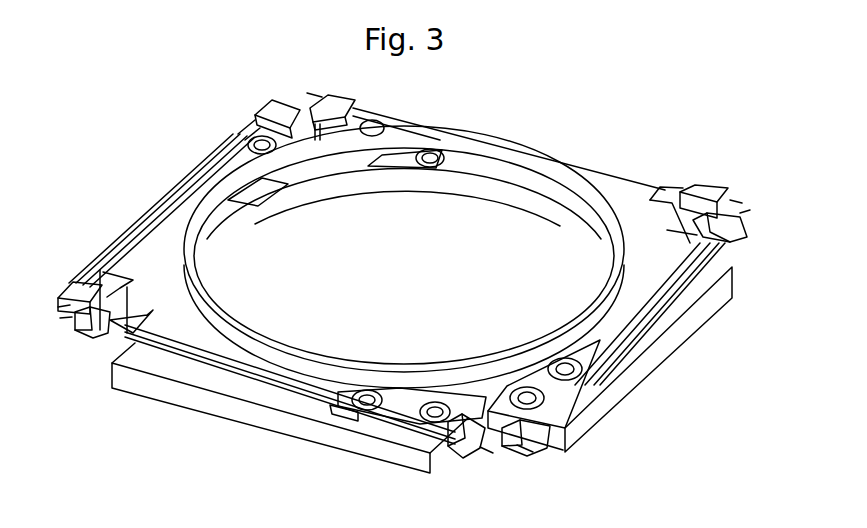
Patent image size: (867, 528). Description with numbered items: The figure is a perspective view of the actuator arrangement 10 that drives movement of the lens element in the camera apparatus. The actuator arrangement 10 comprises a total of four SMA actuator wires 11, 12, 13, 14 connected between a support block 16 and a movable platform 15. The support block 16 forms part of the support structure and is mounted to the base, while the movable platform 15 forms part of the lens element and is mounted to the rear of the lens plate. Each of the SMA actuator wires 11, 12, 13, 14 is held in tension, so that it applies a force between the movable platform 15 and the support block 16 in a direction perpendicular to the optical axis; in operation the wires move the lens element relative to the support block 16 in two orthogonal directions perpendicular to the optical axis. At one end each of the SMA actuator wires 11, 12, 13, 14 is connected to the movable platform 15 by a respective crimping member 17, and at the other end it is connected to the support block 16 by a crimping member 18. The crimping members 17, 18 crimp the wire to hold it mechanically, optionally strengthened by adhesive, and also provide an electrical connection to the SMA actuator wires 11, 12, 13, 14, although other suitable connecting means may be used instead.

The actuator arrangement 10 is at (514, 128).
The SMA actuator wire 11 is at (400, 113).
The SMA actuator wire 12 is at (627, 350).
The SMA actuator wire 13 is at (248, 378).
The SMA actuator wire 14 is at (228, 146).
The movable platform 15 is at (610, 190).
The support block 16 is at (672, 318).
The crimping member 17 is at (77, 283).
The crimping member 18 is at (270, 102).